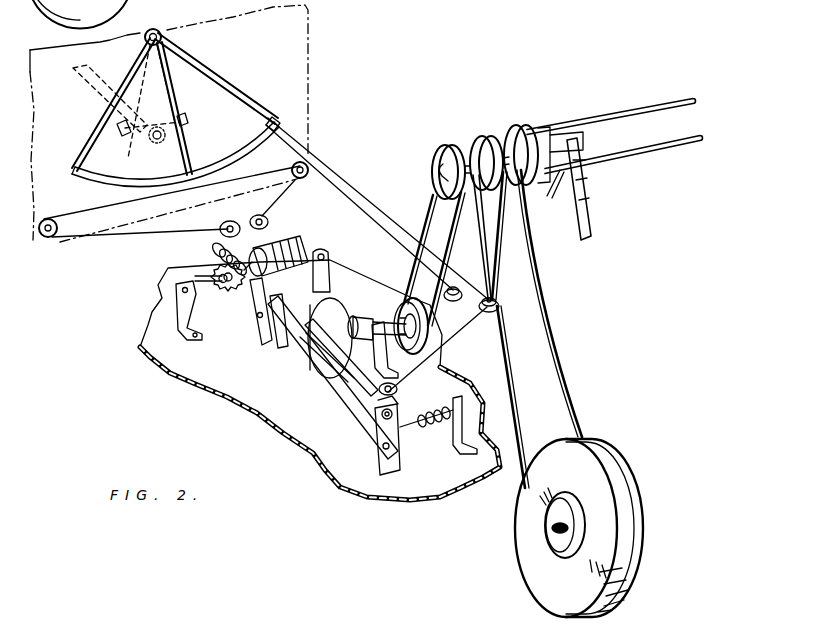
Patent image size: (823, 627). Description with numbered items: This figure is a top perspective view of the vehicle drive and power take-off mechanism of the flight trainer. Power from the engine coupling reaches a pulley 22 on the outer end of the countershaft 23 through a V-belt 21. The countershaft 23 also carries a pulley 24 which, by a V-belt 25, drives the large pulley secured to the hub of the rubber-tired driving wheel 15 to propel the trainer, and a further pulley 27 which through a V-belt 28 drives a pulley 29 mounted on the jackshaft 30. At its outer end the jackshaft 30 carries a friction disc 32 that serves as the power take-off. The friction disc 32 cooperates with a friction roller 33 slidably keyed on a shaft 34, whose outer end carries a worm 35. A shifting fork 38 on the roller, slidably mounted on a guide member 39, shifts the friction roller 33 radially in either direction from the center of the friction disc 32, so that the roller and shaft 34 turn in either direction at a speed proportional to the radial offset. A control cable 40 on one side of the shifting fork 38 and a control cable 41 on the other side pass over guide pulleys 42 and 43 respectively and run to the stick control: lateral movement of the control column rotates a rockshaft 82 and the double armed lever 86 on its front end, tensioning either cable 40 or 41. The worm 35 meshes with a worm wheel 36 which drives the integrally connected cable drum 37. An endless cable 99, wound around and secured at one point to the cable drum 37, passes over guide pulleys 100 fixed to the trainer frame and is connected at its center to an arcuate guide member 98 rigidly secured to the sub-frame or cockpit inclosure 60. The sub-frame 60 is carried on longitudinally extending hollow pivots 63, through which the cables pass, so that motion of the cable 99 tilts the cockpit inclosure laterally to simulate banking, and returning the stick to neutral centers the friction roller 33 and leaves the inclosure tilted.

The vehicle wheel 15 is at (634, 546).
The V-belt 21 is at (598, 114).
The pulley 22 is at (521, 128).
The countershaft 23 is at (545, 172).
The pulley 24 is at (482, 140).
The V-belt 25 is at (548, 295).
The pulley 27 is at (444, 155).
The V-belt 28 is at (428, 197).
The pulley 29 is at (430, 328).
The jackshaft 30 is at (398, 340).
The friction disc 32 is at (368, 318).
The friction roller 33 is at (282, 354).
The shaft 34 is at (314, 380).
The worm 35 is at (213, 247).
The worm wheel 36 is at (230, 305).
The cable drum 37 is at (298, 240).
The shifting fork 38 is at (328, 332).
The guide member 39 is at (342, 405).
The control cable 40 is at (172, 110).
The control cable 41 is at (133, 92).
The guide pulley 42 is at (498, 304).
The guide pulley 43 is at (452, 300).
The sub-frame 60 is at (300, 55).
The hollow pivot 63 is at (216, 76).
The rockshaft 82 is at (85, 95).
The double armed lever 86 is at (150, 145).
The arcuate guide member 98 is at (232, 160).
The endless cable 99 is at (108, 205).
The guide pulleys 100 is at (52, 242).